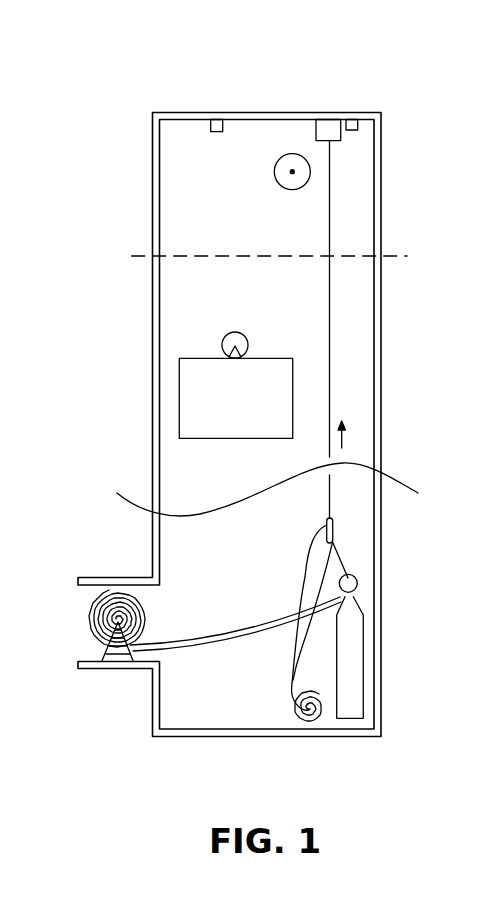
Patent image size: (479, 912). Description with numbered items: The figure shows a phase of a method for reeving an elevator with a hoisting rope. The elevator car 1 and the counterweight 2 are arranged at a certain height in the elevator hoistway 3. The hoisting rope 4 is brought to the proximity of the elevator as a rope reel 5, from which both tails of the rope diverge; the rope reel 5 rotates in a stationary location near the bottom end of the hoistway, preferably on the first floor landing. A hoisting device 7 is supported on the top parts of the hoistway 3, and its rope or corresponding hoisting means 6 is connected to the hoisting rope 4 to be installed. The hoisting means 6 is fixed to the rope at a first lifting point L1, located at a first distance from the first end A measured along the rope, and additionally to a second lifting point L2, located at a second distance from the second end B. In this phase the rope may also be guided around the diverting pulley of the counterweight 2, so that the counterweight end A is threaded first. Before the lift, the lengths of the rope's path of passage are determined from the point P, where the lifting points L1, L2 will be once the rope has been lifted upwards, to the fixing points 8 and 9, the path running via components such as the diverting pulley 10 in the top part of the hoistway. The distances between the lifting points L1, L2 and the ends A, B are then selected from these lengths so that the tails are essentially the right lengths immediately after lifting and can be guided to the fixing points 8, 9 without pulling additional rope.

The elevator car 1 is at (188, 403).
The counterweight 2 is at (350, 707).
The elevator hoistway 3 is at (355, 328).
The hoisting rope 4 is at (92, 637).
The rope reel 5 is at (88, 610).
The hoisting means 6 is at (330, 417).
The hoisting device 7 is at (329, 120).
The fixing point 8 is at (350, 120).
The fixing point 9 is at (217, 120).
The diverting pulley 10 is at (292, 172).
The first lifting point L1 is at (333, 522).
The second lifting point L2 is at (333, 540).
The first end A is at (302, 567).
The second end B is at (309, 726).
The point P is at (356, 171).